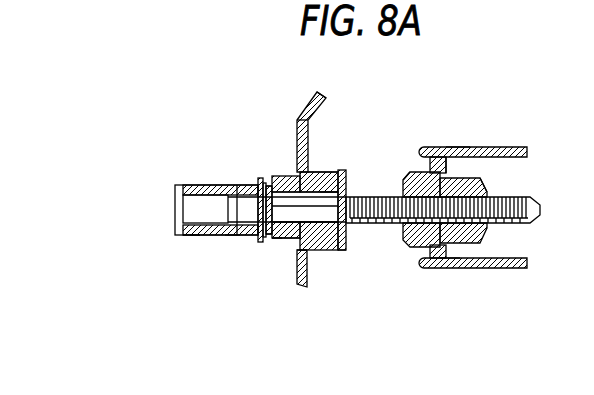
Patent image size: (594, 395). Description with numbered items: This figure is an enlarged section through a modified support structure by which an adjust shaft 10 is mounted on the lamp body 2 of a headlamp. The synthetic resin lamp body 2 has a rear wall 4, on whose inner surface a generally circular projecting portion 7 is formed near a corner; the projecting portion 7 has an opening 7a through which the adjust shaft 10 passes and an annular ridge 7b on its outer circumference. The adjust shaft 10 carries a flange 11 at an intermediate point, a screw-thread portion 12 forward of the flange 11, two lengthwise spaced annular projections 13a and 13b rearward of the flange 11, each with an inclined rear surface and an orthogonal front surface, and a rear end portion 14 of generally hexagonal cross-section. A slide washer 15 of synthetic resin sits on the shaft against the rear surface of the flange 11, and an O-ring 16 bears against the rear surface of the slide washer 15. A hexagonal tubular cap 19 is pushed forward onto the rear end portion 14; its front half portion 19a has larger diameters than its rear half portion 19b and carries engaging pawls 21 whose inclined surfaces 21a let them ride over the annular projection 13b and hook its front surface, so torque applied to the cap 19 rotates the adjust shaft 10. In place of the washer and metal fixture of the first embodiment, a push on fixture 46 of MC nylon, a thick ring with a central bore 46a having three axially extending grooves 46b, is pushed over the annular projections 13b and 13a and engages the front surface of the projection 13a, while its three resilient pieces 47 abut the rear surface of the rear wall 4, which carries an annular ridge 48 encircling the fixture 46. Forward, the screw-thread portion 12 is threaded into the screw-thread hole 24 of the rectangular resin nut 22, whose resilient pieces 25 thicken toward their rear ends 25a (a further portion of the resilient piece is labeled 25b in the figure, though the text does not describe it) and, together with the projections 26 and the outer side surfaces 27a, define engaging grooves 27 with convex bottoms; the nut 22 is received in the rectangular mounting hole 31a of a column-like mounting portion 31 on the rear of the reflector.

The lamp body 2 is at (303, 106).
The rear wall 4 is at (326, 106).
The projecting portion 7 is at (310, 163).
The opening 7a is at (318, 174).
The annular ridge 7b is at (336, 174).
The adjust shaft 10 is at (364, 224).
The flange 11 is at (343, 251).
The screw-thread portion 12 is at (397, 242).
The annular projection 13a is at (259, 178).
The annular projection 13b is at (257, 190).
The rear end portion 14 is at (183, 210).
The slide washer 15 is at (332, 262).
The O-ring 16 is at (323, 244).
The cap 19 is at (177, 238).
The front half portion 19a is at (227, 238).
The rear half portion 19b is at (192, 238).
The engaging pawl 21 is at (272, 182).
The inclined surface 21a is at (270, 240).
The nut 22 is at (404, 248).
The screw-thread hole 24 is at (396, 197).
The resilient piece 25 is at (493, 155).
The rear end 25a is at (448, 157).
The upper plate edge 25b is at (475, 174).
The projection 26 is at (420, 175).
The engaging groove 27 is at (436, 166).
The outer side surface 27a is at (439, 165).
The mounting portion 31 is at (490, 270).
The mounting hole 31a is at (448, 260).
The push on fixture 46 is at (270, 175).
The central bore 46a is at (262, 240).
The axially extending groove 46b is at (267, 175).
The resilient piece 47 is at (285, 243).
The annular ridge 48 is at (283, 174).